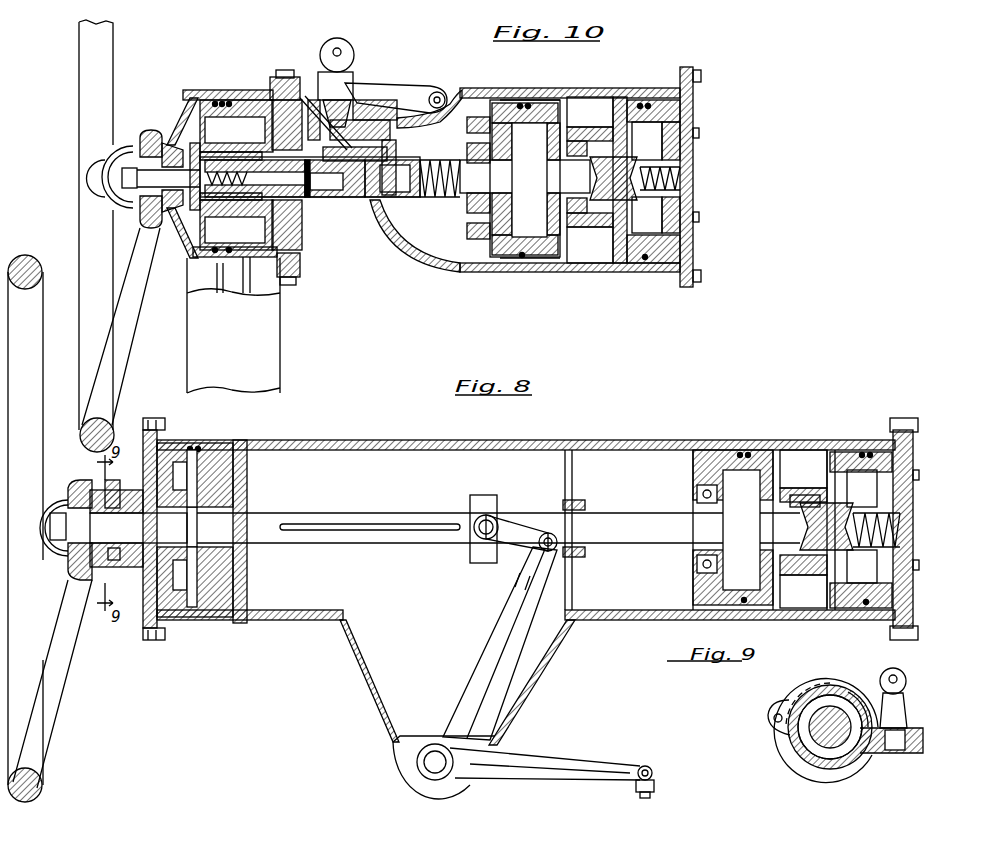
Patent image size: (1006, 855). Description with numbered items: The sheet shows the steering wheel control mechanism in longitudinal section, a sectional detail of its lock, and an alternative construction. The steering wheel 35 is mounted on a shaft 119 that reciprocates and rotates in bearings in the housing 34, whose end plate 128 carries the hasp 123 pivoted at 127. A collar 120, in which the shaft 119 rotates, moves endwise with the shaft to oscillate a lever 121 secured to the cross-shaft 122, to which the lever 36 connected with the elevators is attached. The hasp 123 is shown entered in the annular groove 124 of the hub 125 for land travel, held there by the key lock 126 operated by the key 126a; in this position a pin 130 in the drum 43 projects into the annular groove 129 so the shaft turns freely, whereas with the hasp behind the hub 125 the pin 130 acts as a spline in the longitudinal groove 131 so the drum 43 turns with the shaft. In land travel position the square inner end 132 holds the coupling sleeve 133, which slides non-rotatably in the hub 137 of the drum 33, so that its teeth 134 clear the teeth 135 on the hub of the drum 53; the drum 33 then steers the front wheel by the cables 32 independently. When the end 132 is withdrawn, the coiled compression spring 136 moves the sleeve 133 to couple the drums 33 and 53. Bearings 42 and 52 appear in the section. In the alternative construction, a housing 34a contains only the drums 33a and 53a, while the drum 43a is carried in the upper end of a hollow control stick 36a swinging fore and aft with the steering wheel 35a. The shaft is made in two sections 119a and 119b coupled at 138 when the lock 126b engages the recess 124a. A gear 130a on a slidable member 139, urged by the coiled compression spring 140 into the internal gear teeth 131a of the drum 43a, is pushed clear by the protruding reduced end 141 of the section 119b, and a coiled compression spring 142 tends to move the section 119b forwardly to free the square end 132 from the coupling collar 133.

In FIG. 10, the cables 32 is at (650, 95).
In FIG. 8, the cables 32 is at (875, 445).
In FIG. 8, the drum 33 is at (850, 448).
In FIG. 10, the drum 33a is at (648, 260).
In FIG. 8, the housing 34 is at (607, 440).
In FIG. 10, the housing 34a is at (460, 268).
In FIG. 8, the steering wheel 35 is at (28, 258).
In FIG. 10, the steering wheel 35a is at (108, 62).
In FIG. 8, the lever 36 is at (549, 758).
In FIG. 10, the hollow control stick 36a is at (272, 320).
In FIG. 10, the bearing 42 is at (246, 98).
In FIG. 8, the bearing 42 is at (196, 462).
In FIG. 8, the drum 43 is at (176, 622).
In FIG. 10, the drum 43a is at (214, 96).
In FIG. 10, the bearing 52 is at (530, 103).
In FIG. 8, the bearing 52 is at (742, 455).
In FIG. 8, the drum 53 is at (727, 493).
In FIG. 10, the drum 53a is at (520, 258).
In FIG. 8, the shaft 119 is at (372, 512).
In FIG. 9, the shaft 119 is at (800, 745).
In FIG. 10, the shaft section 119a is at (236, 126).
In FIG. 10, the shaft section 119b is at (525, 180).
In FIG. 8, the collar 120 is at (491, 495).
In FIG. 8, the lever 121 is at (490, 625).
In FIG. 8, the cross-shaft 122 is at (425, 765).
In FIG. 8, the hasp 123 is at (105, 486).
In FIG. 9, the hasp 123 is at (830, 690).
In FIG. 8, the annular groove 124 is at (110, 560).
In FIG. 9, the annular groove 124 is at (840, 760).
In FIG. 10, the recess 124a is at (390, 140).
In FIG. 8, the hub 125 is at (85, 488).
In FIG. 9, the hub 125 is at (788, 740).
In FIG. 9, the key lock 126 is at (892, 748).
In FIG. 9, the key 126a is at (906, 683).
In FIG. 10, the lock 126b is at (343, 108).
In FIG. 9, the pivot 127 is at (770, 718).
In FIG. 8, the end plate 128 is at (143, 612).
In FIG. 9, the end plate 128 is at (818, 768).
In FIG. 8, the annular groove 129 is at (138, 528).
In FIG. 8, the pin 130 is at (197, 516).
In FIG. 10, the gear 130a is at (297, 227).
In FIG. 8, the longitudinal groove 131 is at (330, 535).
In FIG. 10, the internal gear teeth 131a is at (317, 213).
In FIG. 10, the square inner end 132 is at (592, 178).
In FIG. 8, the square inner end 132 is at (804, 526).
In FIG. 10, the coupling sleeve 133 is at (637, 158).
In FIG. 8, the coupling sleeve 133 is at (805, 555).
In FIG. 10, the teeth 134 is at (593, 213).
In FIG. 8, the teeth 134 is at (822, 505).
In FIG. 10, the teeth 135 is at (589, 152).
In FIG. 8, the teeth 135 is at (803, 476).
In FIG. 10, the coiled compression spring 136 is at (653, 215).
In FIG. 8, the coiled compression spring 136 is at (865, 560).
In FIG. 8, the hub 137 is at (861, 479).
In FIG. 10, the coupling 138 is at (365, 200).
In FIG. 10, the slidable member 139 is at (236, 225).
In FIG. 10, the coiled compression spring 140 is at (185, 143).
In FIG. 10, the protruding reduced end 141 is at (310, 177).
In FIG. 10, the coiled compression spring 142 is at (428, 200).